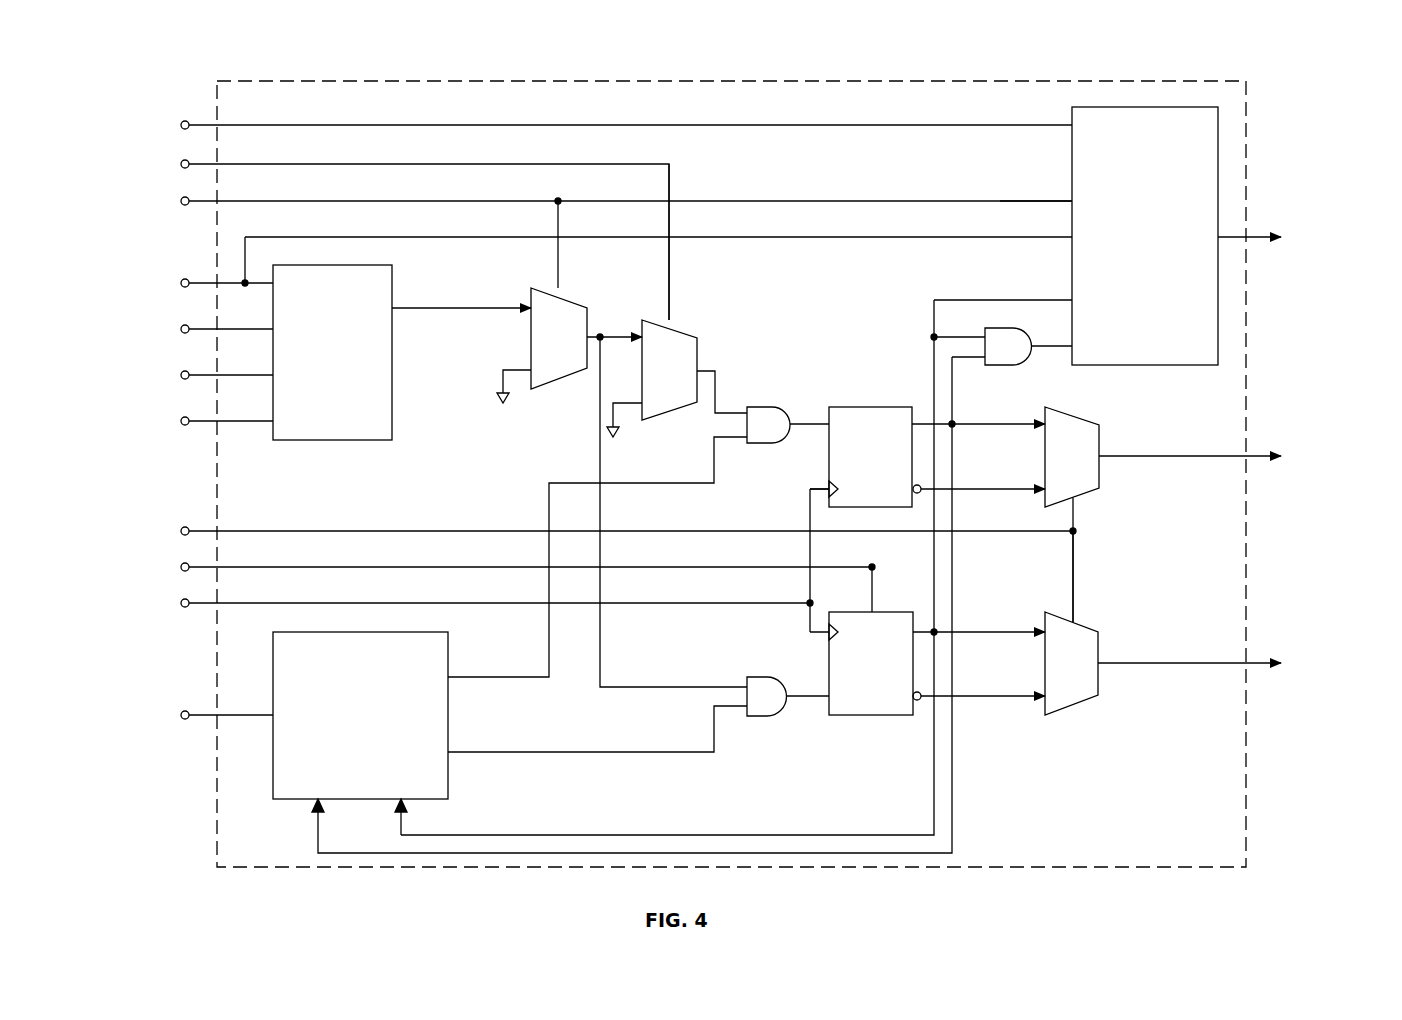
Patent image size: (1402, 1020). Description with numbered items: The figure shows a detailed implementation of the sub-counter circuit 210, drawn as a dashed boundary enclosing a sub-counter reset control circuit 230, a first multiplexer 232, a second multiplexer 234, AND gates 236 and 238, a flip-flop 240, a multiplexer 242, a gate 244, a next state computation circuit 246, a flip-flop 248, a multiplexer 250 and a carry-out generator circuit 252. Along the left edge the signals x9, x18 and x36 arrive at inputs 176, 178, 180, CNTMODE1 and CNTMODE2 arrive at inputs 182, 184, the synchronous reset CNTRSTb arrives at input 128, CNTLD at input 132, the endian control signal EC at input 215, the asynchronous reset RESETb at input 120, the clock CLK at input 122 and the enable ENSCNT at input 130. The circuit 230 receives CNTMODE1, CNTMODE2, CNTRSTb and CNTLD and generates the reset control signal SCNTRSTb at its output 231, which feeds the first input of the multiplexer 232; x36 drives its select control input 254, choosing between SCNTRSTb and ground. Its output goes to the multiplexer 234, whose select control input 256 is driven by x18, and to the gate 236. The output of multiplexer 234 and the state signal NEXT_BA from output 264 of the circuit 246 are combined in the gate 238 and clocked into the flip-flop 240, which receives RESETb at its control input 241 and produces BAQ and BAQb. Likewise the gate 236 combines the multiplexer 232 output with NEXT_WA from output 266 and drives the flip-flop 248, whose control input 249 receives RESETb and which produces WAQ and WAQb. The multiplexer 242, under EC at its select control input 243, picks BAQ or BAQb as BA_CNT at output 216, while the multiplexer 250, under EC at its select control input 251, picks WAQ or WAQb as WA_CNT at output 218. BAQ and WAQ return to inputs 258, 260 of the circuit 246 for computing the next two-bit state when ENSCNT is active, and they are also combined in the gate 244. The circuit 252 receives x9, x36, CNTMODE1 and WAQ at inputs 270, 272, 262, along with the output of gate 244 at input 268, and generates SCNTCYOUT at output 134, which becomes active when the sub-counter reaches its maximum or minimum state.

The circuit 210 is at (1237, 82).
The circuit 252 is at (1199, 107).
The input 176 is at (216, 127).
The input 178 is at (216, 166).
The input 180 is at (216, 203).
The input 182 is at (216, 285).
The input 184 is at (216, 331).
The input 128 is at (216, 377).
The input 132 is at (216, 423).
The circuit 230 is at (373, 266).
The output 231 is at (394, 312).
The select control input 254 is at (557, 297).
The multiplexer 232 is at (578, 306).
The select control input 256 is at (668, 328).
The multiplexer 234 is at (688, 337).
The gate 238 is at (772, 407).
The flip-flop 240 is at (872, 407).
The control input 241 is at (871, 508).
The multiplexer 242 is at (1091, 492).
The select control input 243 is at (1074, 502).
The gate 244 is at (1000, 365).
The input 262 is at (1068, 301).
The carry-out generator input 268 is at (1068, 347).
The carry-out generator input 270 is at (1068, 202).
The carry-out generator input 272 is at (1068, 238).
The output 134 is at (1248, 239).
The output 216 is at (1248, 458).
The output 218 is at (1248, 665).
The input 215 is at (216, 533).
The input 120 is at (216, 569).
The input 122 is at (216, 605).
The input 130 is at (216, 717).
The circuit 246 is at (440, 632).
The output 264 is at (449, 680).
The output 266 is at (449, 755).
The input 258 is at (323, 803).
The input 260 is at (406, 803).
The gate 236 is at (770, 679).
The control input 249 is at (871, 612).
The flip-flop 248 is at (871, 716).
The multiplexer 250 is at (1090, 630).
The select control input 251 is at (1092, 612).